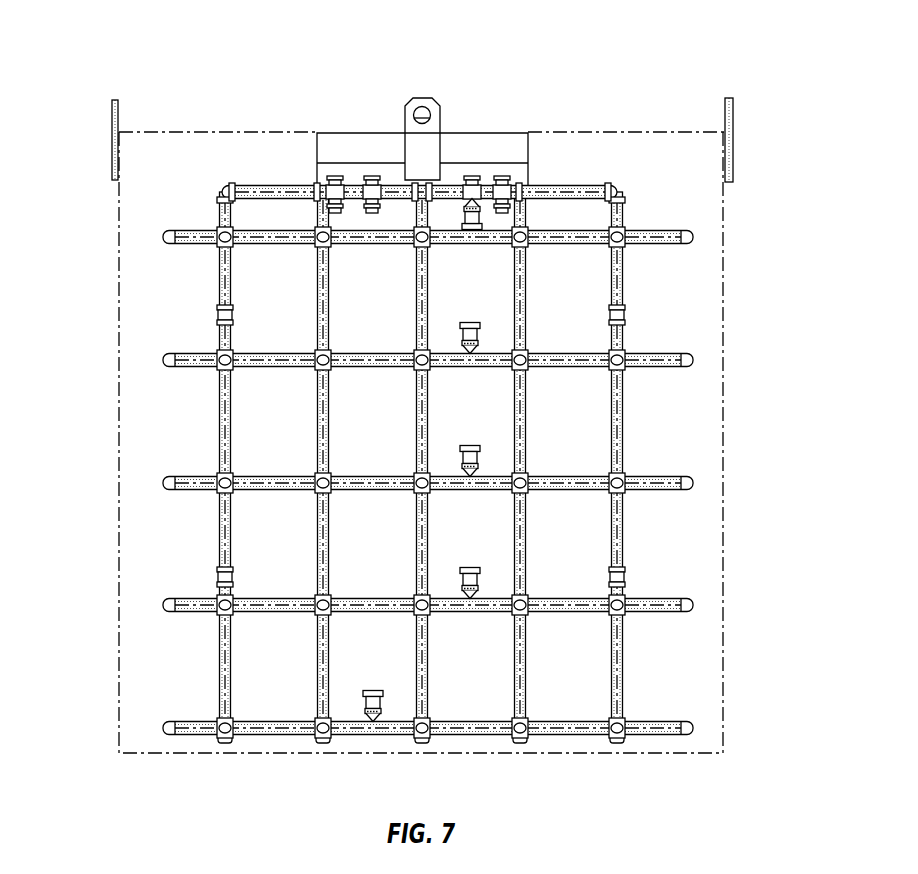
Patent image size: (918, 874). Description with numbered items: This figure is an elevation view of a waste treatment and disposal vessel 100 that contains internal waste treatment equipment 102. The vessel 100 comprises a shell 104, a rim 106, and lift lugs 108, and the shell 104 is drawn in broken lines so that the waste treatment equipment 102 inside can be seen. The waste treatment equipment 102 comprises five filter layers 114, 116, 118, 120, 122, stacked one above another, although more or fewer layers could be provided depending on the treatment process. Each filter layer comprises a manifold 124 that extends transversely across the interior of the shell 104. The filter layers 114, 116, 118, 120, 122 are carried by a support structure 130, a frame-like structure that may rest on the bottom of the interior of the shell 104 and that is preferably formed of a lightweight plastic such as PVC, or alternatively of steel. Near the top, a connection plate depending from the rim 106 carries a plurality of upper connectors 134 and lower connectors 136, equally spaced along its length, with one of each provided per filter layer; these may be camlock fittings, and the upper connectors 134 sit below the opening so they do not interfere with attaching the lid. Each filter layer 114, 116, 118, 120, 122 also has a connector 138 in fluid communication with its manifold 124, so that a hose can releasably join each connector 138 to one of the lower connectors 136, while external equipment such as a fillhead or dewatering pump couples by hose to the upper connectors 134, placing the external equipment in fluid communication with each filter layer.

The waste treatment and disposal vessel 100 is at (167, 72).
The waste treatment equipment 102 is at (245, 150).
The shell 104 is at (725, 408).
The rim 106 is at (500, 139).
The lift lugs 108 is at (423, 98).
The filter layer 114 is at (697, 237).
The filter layer 116 is at (697, 360).
The filter layer 118 is at (697, 483).
The filter layer 120 is at (697, 605).
The filter layer 122 is at (697, 728).
The manifold 124 is at (577, 740).
The support structure 130 is at (222, 418).
The upper connectors 134 is at (510, 181).
The lower connectors 136 is at (366, 207).
The connector 138 is at (490, 316).